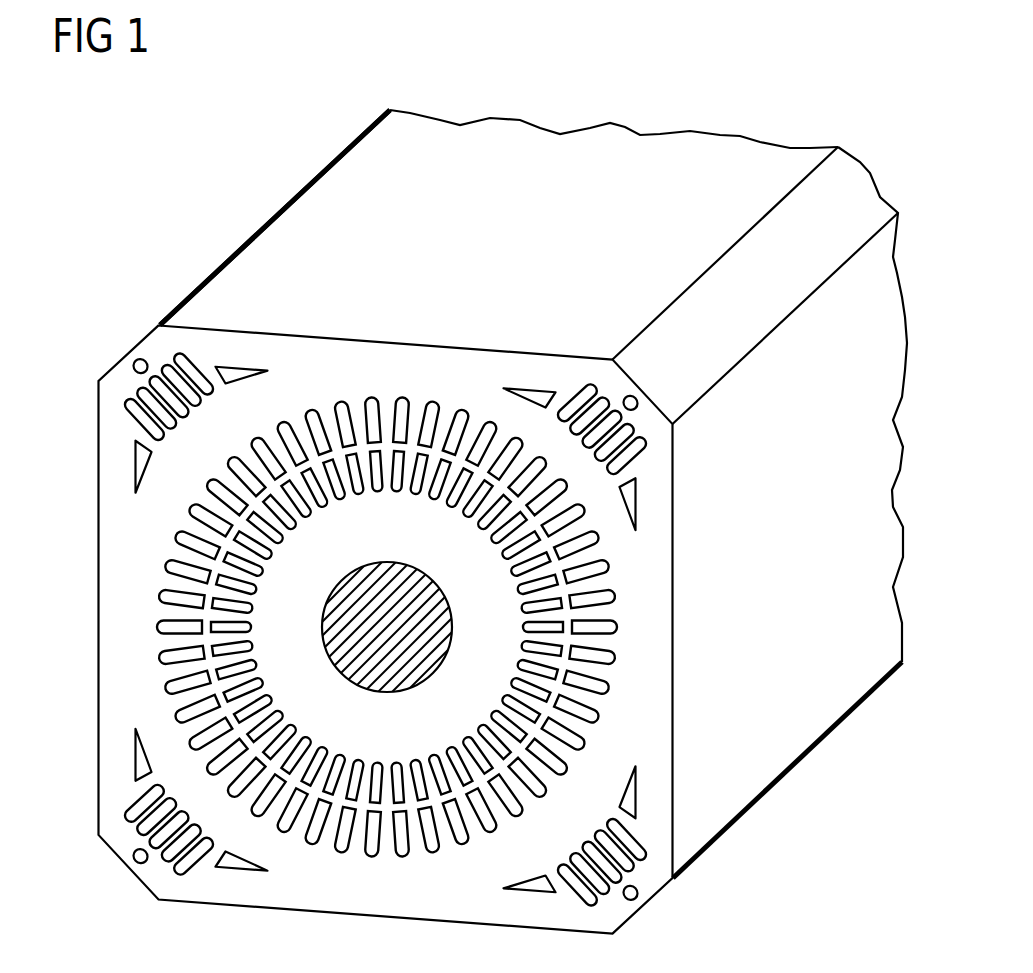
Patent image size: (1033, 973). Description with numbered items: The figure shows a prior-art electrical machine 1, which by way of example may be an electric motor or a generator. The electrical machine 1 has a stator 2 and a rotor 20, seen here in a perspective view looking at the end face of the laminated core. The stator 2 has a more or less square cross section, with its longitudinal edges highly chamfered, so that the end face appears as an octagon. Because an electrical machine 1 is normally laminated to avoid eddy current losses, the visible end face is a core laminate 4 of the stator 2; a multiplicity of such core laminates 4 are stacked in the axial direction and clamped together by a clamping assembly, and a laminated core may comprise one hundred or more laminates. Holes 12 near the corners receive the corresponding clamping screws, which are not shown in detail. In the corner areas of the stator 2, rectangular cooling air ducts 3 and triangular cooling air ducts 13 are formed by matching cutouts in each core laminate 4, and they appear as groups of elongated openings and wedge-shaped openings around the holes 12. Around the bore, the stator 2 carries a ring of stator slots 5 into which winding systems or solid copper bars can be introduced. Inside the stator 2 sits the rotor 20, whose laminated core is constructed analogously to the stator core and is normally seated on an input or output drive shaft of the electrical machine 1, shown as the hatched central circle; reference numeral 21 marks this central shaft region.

The electrical machine 1 is at (752, 100).
The stator 2 is at (258, 266).
The rectangular cooling air ducts 3 is at (634, 440).
The core laminate 4 is at (402, 388).
The stator slots 5 is at (167, 571).
The holes 12 is at (131, 367).
The triangular cooling air ducts 13 is at (640, 497).
The rotor 20 is at (387, 646).
The shaft 21 is at (350, 598).